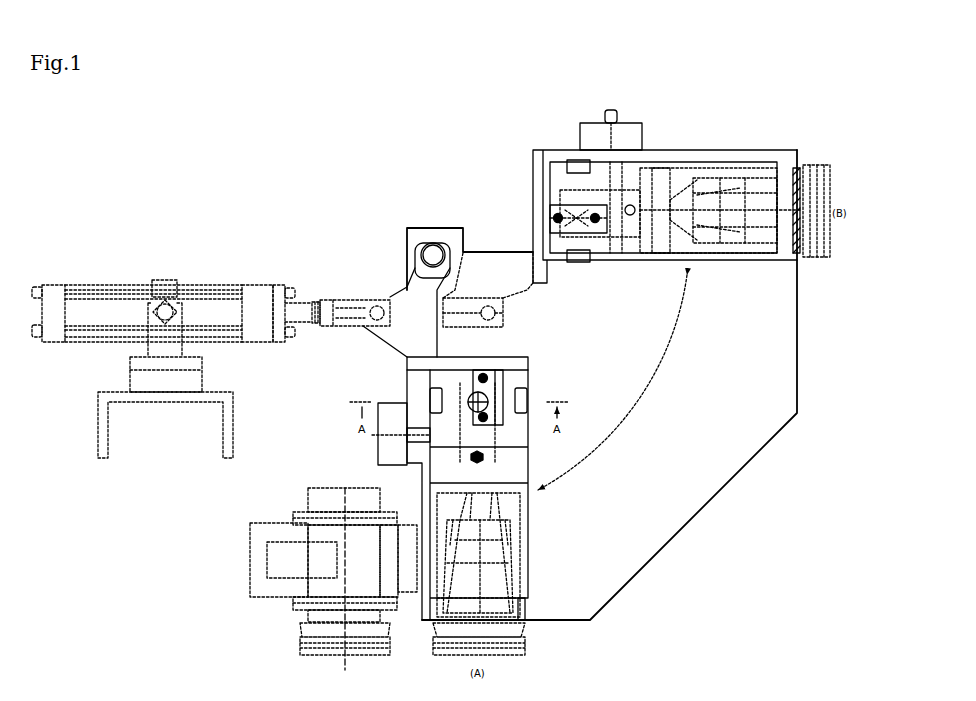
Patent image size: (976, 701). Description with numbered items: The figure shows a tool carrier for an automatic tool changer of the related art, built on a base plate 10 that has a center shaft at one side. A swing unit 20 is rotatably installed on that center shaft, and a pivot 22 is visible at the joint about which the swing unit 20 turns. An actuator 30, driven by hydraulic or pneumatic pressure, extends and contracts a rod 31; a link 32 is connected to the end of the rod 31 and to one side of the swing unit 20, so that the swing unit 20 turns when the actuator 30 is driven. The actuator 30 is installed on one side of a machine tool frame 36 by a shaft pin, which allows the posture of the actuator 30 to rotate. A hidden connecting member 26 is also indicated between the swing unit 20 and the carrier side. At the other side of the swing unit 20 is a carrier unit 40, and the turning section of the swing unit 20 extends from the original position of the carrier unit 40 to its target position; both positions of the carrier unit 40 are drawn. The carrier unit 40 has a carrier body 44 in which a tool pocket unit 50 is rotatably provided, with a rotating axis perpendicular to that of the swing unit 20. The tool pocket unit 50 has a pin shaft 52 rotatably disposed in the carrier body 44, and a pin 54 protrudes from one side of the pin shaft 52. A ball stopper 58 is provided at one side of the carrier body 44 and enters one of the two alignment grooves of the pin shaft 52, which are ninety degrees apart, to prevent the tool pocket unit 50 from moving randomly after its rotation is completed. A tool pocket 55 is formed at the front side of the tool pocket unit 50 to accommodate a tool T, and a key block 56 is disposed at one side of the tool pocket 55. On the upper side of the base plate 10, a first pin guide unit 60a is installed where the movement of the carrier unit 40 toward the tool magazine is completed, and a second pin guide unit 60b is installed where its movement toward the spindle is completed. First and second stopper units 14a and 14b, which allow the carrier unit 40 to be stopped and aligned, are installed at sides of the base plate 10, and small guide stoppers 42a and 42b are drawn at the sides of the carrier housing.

The base plate 10 is at (680, 532).
The first stopper unit 14a is at (378, 440).
The second stopper unit 14b is at (583, 124).
The swing unit 20 is at (405, 290).
The pivot shaft 22 is at (430, 243).
The link 26 is at (508, 275).
The actuator 30 is at (207, 284).
The rod 31 is at (313, 300).
The link 32 is at (345, 298).
The machine tool frame 36 is at (110, 390).
The carrier unit 40 is at (548, 182).
The guide stopper 42a is at (572, 160).
The guide stopper 42b is at (578, 264).
The carrier body 44 is at (520, 578).
The tool pocket unit 50 is at (703, 167).
The pin shaft 52 is at (612, 250).
The pin 54 is at (163, 304).
The tool pocket 55 is at (500, 532).
The key block 56 is at (527, 612).
The ball stopper 58 is at (795, 252).
The first pin guide unit 60a is at (510, 378).
The second pin guide unit 60b is at (600, 236).
The tool T is at (823, 165).